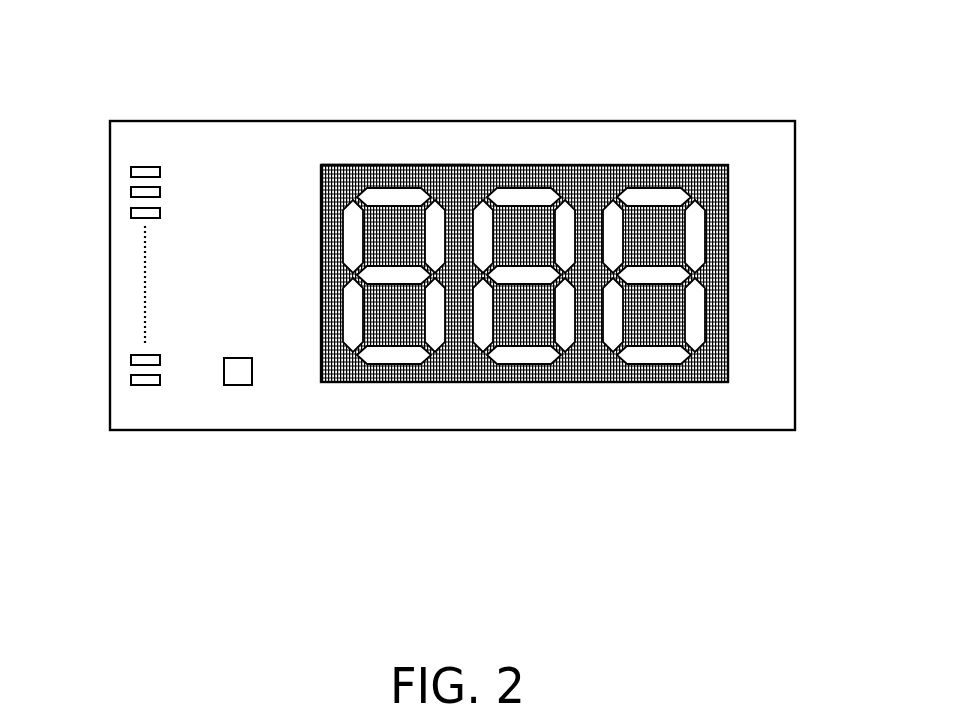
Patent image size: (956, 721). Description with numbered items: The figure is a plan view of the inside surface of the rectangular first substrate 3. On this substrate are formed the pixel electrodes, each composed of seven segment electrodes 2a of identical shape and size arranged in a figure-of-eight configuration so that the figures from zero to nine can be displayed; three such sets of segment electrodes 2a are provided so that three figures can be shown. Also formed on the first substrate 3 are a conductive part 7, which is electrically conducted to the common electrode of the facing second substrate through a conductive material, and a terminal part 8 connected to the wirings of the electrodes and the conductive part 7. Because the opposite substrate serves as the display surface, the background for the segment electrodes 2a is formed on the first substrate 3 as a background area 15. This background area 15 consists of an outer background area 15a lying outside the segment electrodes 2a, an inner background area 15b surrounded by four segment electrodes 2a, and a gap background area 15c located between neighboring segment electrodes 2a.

The first substrate 3 is at (712, 105).
The conductive part 7 is at (242, 378).
The terminal part 8 is at (131, 172).
The background area 15 is at (532, 165).
The outer background area 15a is at (471, 166).
The inner background area 15b is at (535, 220).
The gap background area 15c is at (352, 212).
The segment electrode 2a is at (393, 197).